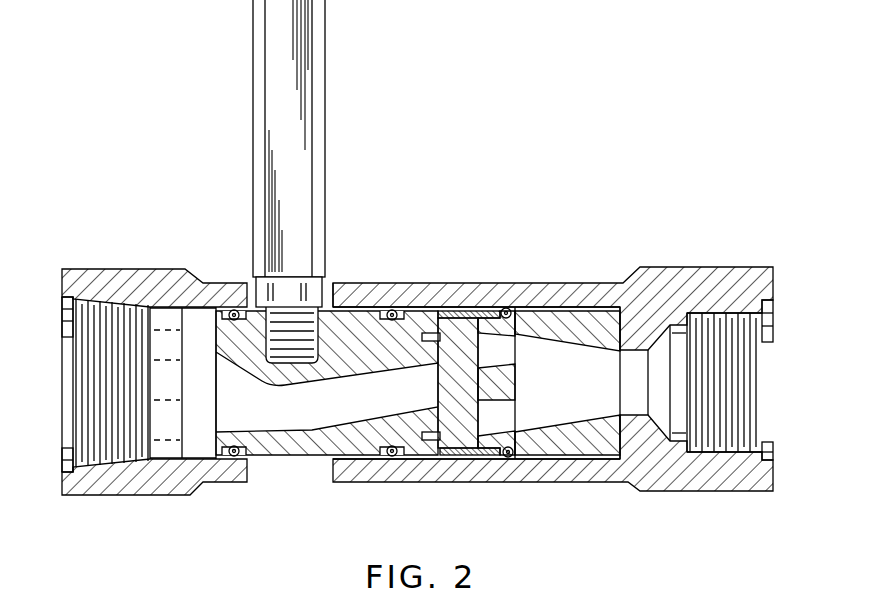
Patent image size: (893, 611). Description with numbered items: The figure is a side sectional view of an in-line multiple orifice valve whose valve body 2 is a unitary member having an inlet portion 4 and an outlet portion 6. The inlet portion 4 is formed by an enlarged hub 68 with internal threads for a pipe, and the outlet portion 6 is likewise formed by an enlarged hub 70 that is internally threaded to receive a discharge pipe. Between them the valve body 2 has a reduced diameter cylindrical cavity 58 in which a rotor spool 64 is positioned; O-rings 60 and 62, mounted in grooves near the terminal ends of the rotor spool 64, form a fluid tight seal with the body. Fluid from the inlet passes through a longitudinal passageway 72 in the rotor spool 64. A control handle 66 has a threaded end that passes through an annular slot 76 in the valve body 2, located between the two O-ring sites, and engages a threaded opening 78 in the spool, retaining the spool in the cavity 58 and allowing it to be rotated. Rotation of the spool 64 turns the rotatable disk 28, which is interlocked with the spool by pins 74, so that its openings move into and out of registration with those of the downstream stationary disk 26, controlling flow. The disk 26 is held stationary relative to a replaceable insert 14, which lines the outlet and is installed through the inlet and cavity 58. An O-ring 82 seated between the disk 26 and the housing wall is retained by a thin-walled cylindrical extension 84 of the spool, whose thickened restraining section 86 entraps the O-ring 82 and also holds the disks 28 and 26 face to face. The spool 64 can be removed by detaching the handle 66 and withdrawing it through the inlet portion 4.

The valve body 2 is at (217, 277).
The inlet portion 4 is at (93, 268).
The outlet portion 6 is at (688, 266).
The insert member 14 is at (552, 308).
The downstream stationary disk 26 is at (548, 456).
The rotatable disk 28 is at (453, 378).
The cylindrical cavity 58 is at (343, 323).
The O-ring 60 is at (248, 460).
The O-ring 62 is at (397, 460).
The rotor spool 64 is at (397, 306).
The control handle 66 is at (325, 152).
The enlarged hub 68 is at (123, 490).
The enlarged hub 70 is at (728, 485).
The passageway 72 is at (262, 418).
The pins 74 is at (435, 310).
The annular slot 76 is at (250, 288).
The threaded opening 78 is at (260, 333).
The O-ring 82 is at (504, 305).
The cylindrical extension 84 is at (458, 455).
The restraining section 86 is at (500, 457).